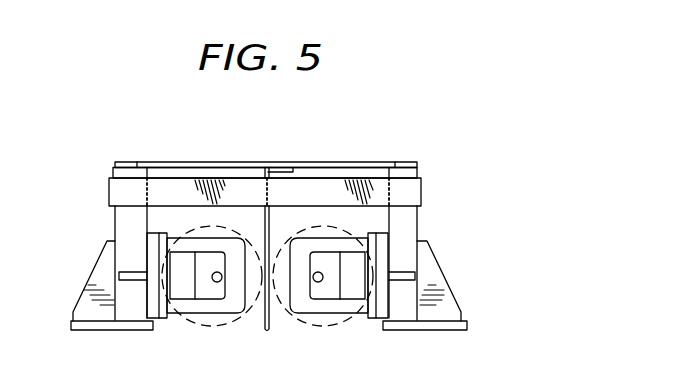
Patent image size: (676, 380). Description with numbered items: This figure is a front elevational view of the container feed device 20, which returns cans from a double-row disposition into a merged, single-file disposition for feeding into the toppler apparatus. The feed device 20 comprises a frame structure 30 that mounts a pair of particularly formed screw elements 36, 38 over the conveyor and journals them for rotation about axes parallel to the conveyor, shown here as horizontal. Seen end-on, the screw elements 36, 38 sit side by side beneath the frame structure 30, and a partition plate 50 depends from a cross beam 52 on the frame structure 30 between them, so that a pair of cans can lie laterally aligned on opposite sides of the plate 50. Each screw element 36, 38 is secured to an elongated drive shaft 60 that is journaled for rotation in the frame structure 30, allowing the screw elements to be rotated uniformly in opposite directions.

The container feed device 20 is at (376, 138).
The frame structure 30 is at (423, 192).
The screw element 36 is at (332, 319).
The screw element 38 is at (214, 323).
The partition plate 50 is at (267, 331).
The cross beam 52 is at (167, 161).
The drive shaft 60 is at (319, 272).